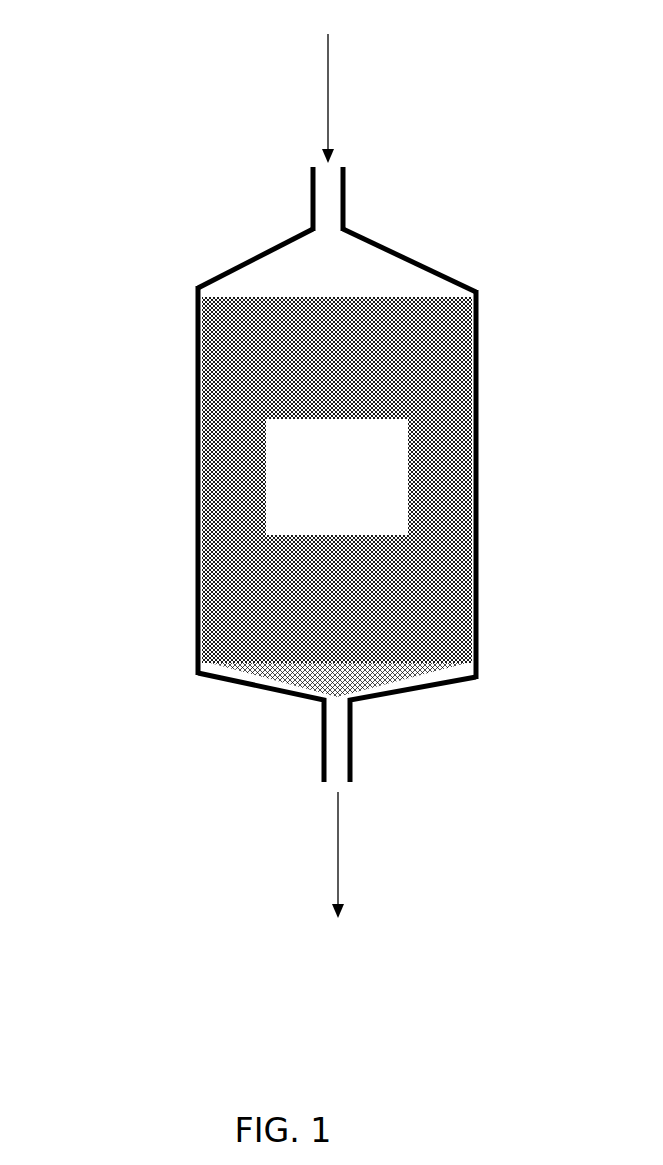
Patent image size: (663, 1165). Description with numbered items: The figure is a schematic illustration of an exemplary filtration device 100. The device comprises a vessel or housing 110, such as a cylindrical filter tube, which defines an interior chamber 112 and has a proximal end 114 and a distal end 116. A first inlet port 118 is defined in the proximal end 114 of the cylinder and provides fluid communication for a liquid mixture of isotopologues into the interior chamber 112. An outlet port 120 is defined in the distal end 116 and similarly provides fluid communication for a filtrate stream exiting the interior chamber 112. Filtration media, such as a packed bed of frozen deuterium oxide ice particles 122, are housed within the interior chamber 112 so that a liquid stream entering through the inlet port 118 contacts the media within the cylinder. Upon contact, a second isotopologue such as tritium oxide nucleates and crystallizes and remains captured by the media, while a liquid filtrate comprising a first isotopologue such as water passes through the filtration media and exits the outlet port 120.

The filtration device 100 is at (259, 479).
The vessel or housing 110 is at (196, 355).
The interior chamber 112 is at (275, 273).
The proximal end 114 is at (409, 229).
The distal end 116 is at (337, 722).
The first inlet port 118 is at (328, 86).
The outlet port 120 is at (338, 871).
The packed bed of frozen deuterium oxide ice particles 122 is at (363, 425).